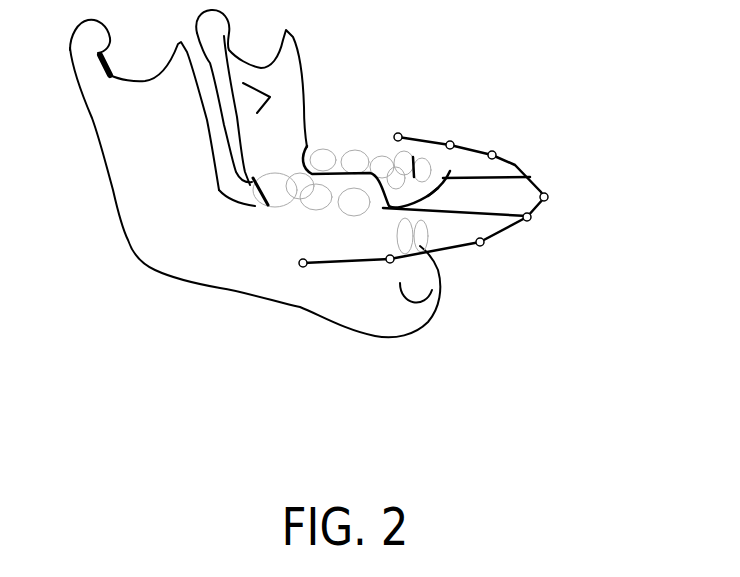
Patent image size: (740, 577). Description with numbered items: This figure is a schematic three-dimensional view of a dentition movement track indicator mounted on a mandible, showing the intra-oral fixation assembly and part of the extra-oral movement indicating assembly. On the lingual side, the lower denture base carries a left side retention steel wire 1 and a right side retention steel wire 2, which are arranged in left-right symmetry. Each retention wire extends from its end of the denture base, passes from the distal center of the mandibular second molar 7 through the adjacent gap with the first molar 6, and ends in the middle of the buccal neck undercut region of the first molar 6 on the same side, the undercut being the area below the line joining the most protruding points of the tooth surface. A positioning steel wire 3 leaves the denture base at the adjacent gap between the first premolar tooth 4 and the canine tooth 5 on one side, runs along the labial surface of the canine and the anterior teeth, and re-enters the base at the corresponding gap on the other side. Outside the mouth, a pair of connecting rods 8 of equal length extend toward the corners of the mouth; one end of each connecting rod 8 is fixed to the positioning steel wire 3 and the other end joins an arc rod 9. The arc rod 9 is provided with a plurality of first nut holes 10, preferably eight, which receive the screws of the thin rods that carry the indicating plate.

The left side retention steel wire 1 is at (262, 200).
The right side retention steel wire 2 is at (306, 149).
The positioning steel wire 3 is at (433, 190).
The first premolar tooth 4 is at (373, 200).
The canine tooth 5 is at (395, 188).
The first molar 6 is at (328, 198).
The second molar 7 is at (275, 188).
The connecting rod 8 is at (493, 178).
The arc rod 9 is at (468, 147).
The first nut hole 10 is at (547, 196).